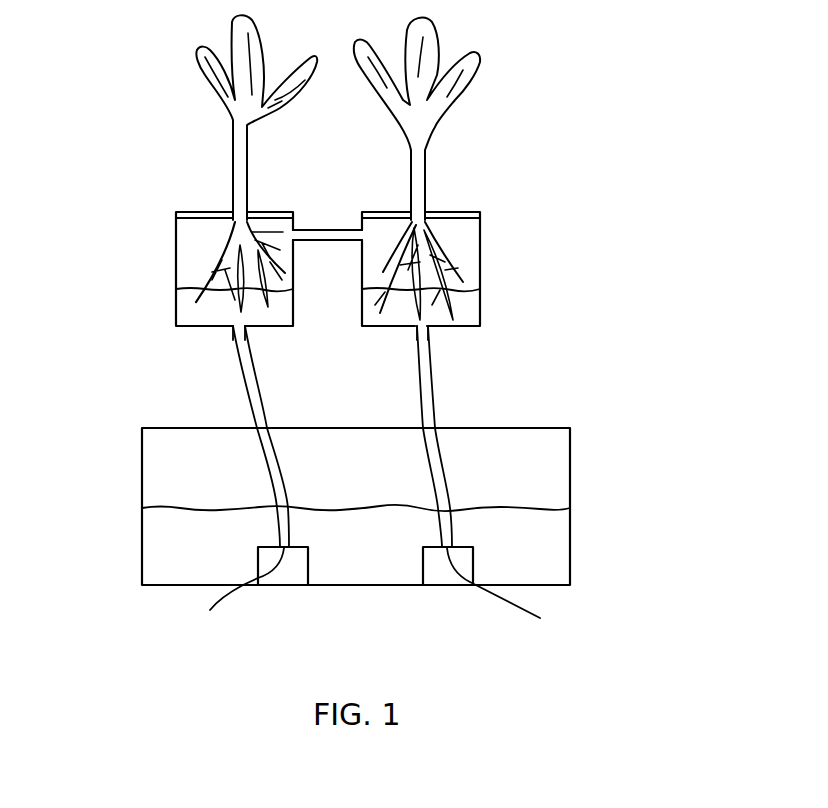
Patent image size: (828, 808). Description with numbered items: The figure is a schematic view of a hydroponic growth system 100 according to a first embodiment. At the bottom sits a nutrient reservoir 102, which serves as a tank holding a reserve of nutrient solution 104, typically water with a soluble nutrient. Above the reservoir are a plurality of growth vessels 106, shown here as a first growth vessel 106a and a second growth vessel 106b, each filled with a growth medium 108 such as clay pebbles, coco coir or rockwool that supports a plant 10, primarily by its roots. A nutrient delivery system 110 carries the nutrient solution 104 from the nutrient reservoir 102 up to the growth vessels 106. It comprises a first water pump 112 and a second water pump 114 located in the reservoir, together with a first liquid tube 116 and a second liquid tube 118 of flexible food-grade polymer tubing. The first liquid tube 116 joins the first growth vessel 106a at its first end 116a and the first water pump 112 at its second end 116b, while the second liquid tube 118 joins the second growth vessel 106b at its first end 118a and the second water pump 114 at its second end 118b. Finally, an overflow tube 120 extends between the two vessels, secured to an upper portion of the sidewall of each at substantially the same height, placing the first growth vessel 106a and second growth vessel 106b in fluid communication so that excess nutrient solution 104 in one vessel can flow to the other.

The plant 10 is at (235, 119).
The hydroponic growth system 100 is at (610, 167).
The nutrient reservoir 102 is at (143, 463).
The nutrient solution 104 is at (173, 558).
The growth vessels 106 is at (160, 223).
The first growth vessel 106a is at (190, 252).
The second growth vessel 106b is at (467, 230).
The growth medium 108 is at (190, 312).
The nutrient delivery system 110 is at (603, 418).
The first water pump 112 is at (290, 577).
The second water pump 114 is at (448, 575).
The first liquid tube 116 is at (248, 392).
The first end 116a is at (237, 328).
The second end 116b is at (236, 592).
The second liquid tube 118 is at (423, 395).
The first end 118a is at (425, 328).
The second end 118b is at (520, 595).
The overflow tube 120 is at (331, 229).